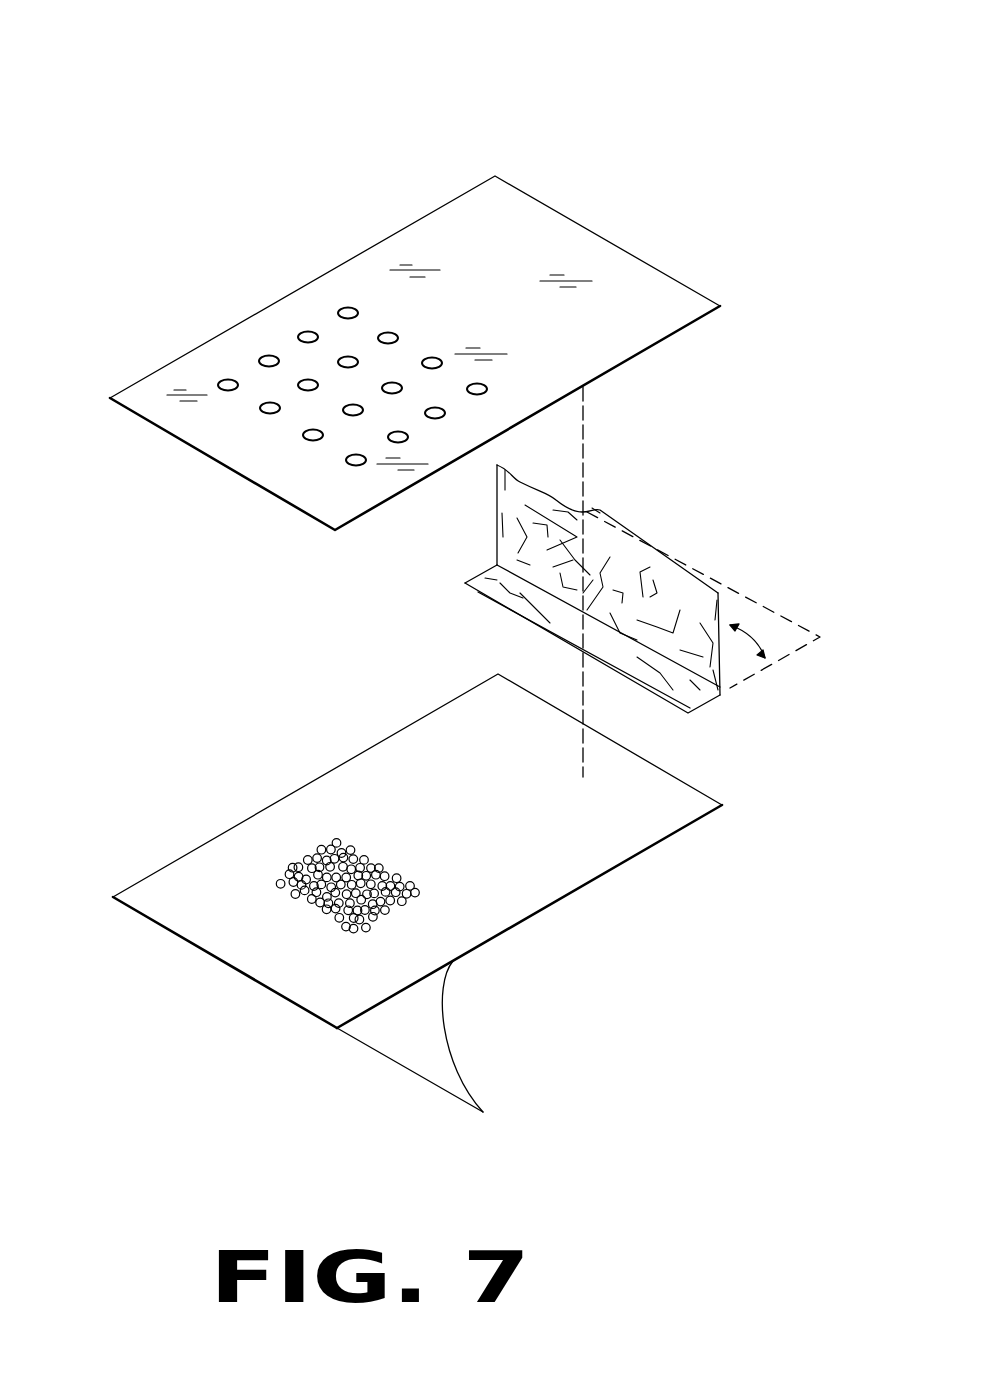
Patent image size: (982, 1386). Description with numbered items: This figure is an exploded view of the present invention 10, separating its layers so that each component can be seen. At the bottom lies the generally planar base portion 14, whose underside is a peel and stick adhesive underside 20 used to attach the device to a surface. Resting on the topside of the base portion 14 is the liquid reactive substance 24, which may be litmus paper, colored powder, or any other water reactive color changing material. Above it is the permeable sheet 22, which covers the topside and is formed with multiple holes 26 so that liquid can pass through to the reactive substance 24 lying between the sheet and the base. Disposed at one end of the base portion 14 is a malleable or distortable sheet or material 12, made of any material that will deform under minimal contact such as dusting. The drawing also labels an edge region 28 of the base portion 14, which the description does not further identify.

The present invention 10 is at (610, 71).
The malleable or distortable sheet or material 12 is at (660, 565).
The base portion 14 is at (635, 857).
The peel and stick adhesive underside 20 is at (452, 1065).
The permeable sheet 22 is at (370, 273).
The liquid reactive substance 24 is at (330, 852).
The holes 26 is at (270, 408).
The edge seal 28 is at (257, 982).